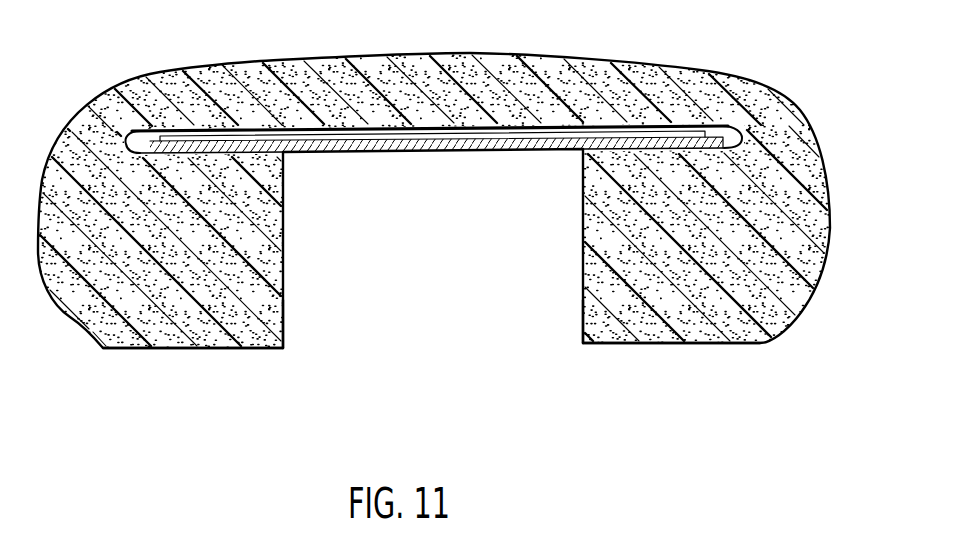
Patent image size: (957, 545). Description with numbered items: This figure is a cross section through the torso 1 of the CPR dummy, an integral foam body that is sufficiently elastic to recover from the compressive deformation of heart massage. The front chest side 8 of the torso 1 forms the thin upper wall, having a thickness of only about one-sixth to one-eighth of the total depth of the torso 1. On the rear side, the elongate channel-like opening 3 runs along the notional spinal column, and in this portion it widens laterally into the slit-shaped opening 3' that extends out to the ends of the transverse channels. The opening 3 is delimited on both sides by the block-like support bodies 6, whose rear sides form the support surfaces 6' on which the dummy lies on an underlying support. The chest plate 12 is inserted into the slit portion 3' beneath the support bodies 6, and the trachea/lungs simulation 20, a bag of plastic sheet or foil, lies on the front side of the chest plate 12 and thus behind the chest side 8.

The torso 1 is at (117, 358).
The opening 3 is at (433, 236).
The slit-shaped opening 3' is at (436, 101).
The support bodies 6 is at (431, 386).
The support surfaces 6' is at (495, 368).
The front chest side 8 is at (412, 103).
The chest plate 12 is at (390, 153).
The trachea/lungs simulation 20 is at (479, 138).